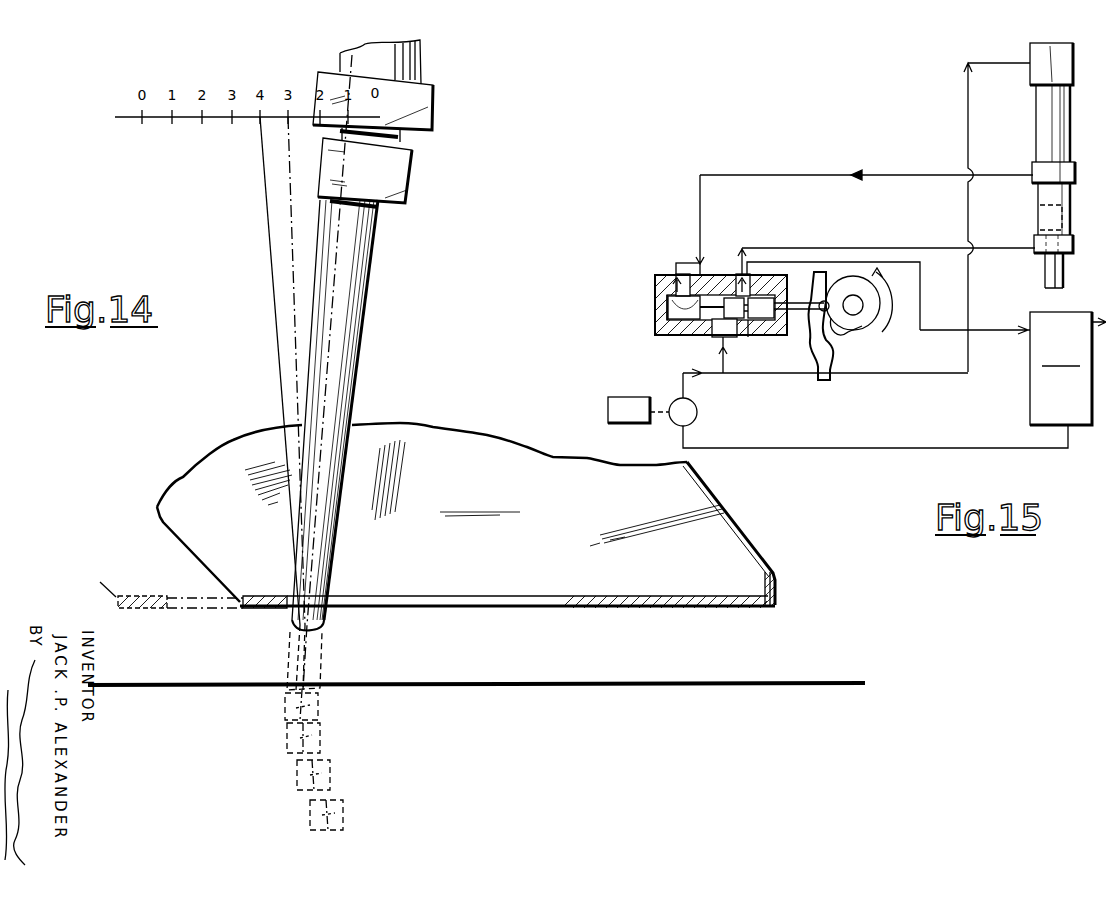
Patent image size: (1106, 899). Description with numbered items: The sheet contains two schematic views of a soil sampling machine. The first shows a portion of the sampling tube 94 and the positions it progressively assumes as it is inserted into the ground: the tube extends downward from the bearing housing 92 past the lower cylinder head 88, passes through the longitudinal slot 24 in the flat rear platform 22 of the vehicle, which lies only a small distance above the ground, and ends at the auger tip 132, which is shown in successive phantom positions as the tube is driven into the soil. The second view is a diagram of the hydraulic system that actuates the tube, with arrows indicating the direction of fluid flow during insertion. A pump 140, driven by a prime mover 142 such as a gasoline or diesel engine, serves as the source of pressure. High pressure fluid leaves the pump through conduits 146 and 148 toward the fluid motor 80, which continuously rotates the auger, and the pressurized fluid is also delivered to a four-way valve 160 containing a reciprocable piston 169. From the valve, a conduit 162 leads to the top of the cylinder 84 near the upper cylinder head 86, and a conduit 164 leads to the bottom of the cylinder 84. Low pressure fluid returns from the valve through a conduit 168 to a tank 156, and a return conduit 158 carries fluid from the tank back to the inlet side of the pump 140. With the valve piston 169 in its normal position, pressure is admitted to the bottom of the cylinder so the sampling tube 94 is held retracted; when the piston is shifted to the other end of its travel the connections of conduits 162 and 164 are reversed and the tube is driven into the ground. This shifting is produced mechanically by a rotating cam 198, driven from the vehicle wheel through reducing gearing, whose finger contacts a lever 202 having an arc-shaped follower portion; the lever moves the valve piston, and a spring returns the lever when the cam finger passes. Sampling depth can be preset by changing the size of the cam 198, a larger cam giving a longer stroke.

In FIG. 14, the rear platform 22 is at (668, 606).
In FIG. 14, the longitudinal slot 24 is at (516, 605).
In FIG. 14, the auger tip 132 is at (322, 628).
In FIG. 14, the lower cylinder head 88 is at (437, 118).
In FIG. 15, the lower cylinder head 88 is at (1073, 250).
In FIG. 14, the bearing housing 92 is at (410, 183).
In FIG. 14, the sampling tube 94 is at (370, 300).
In FIG. 15, the fluid motor 80 is at (1073, 52).
In FIG. 15, the cylinder 84 is at (1071, 198).
In FIG. 15, the upper cylinder head 86 is at (1075, 175).
In FIG. 15, the pump 140 is at (697, 412).
In FIG. 15, the prime mover 142 is at (608, 398).
In FIG. 15, the conduit 146 is at (683, 375).
In FIG. 15, the conduit 148 is at (950, 373).
In FIG. 15, the tank 156 is at (1068, 368).
In FIG. 15, the return conduit 158 is at (888, 448).
In FIG. 15, the four-way valve 160 is at (655, 300).
In FIG. 15, the conduit 162 is at (872, 175).
In FIG. 15, the conduit 164 is at (863, 248).
In FIG. 15, the conduit 168 is at (1010, 311).
In FIG. 15, the reciprocable piston 169 is at (745, 338).
In FIG. 15, the cam 198 is at (862, 330).
In FIG. 15, the lever 202 is at (832, 374).